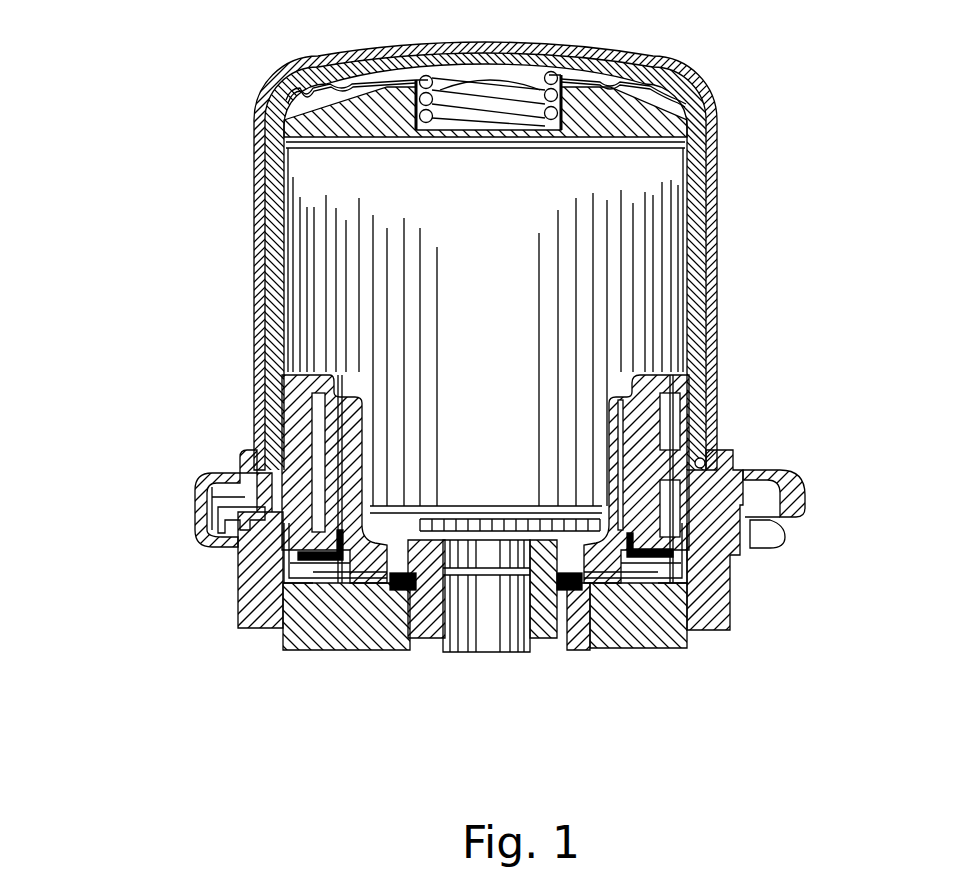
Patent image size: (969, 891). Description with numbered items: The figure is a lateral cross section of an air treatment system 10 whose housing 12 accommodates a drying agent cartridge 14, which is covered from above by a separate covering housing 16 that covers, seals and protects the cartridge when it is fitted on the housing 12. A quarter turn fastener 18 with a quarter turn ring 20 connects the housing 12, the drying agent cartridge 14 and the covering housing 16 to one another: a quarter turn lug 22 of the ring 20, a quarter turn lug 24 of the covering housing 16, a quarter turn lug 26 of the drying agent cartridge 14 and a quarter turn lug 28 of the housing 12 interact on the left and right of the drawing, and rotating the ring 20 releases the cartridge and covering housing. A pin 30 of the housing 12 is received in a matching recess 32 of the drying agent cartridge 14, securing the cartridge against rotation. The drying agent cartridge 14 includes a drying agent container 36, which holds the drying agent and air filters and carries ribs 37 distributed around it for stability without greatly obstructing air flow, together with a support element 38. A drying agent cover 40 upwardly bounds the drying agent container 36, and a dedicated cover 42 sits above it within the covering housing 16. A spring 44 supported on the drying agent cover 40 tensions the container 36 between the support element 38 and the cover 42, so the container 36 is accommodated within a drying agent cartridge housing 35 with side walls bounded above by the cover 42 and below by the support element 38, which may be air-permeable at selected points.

The air treatment system 10 is at (222, 298).
The housing 12 is at (735, 578).
The drying agent cartridge 14 is at (635, 252).
The covering housing 16 is at (700, 88).
The quarter turn fastener 18 is at (211, 440).
The quarter turn ring 20 is at (212, 506).
The quarter turn lug 22 is at (198, 537).
The quarter turn lug 24 is at (213, 473).
The quarter turn lug 26 is at (197, 497).
The quarter turn lug 28 is at (252, 590).
The pin 30 is at (600, 633).
The recess 32 is at (600, 552).
The drying agent cartridge housing 35 is at (266, 215).
The drying agent container 36 is at (360, 555).
The ribs 37 is at (620, 447).
The support element 38 is at (362, 546).
The drying agent cover 40 is at (632, 128).
The cover 42 is at (633, 100).
The spring 44 is at (417, 90).